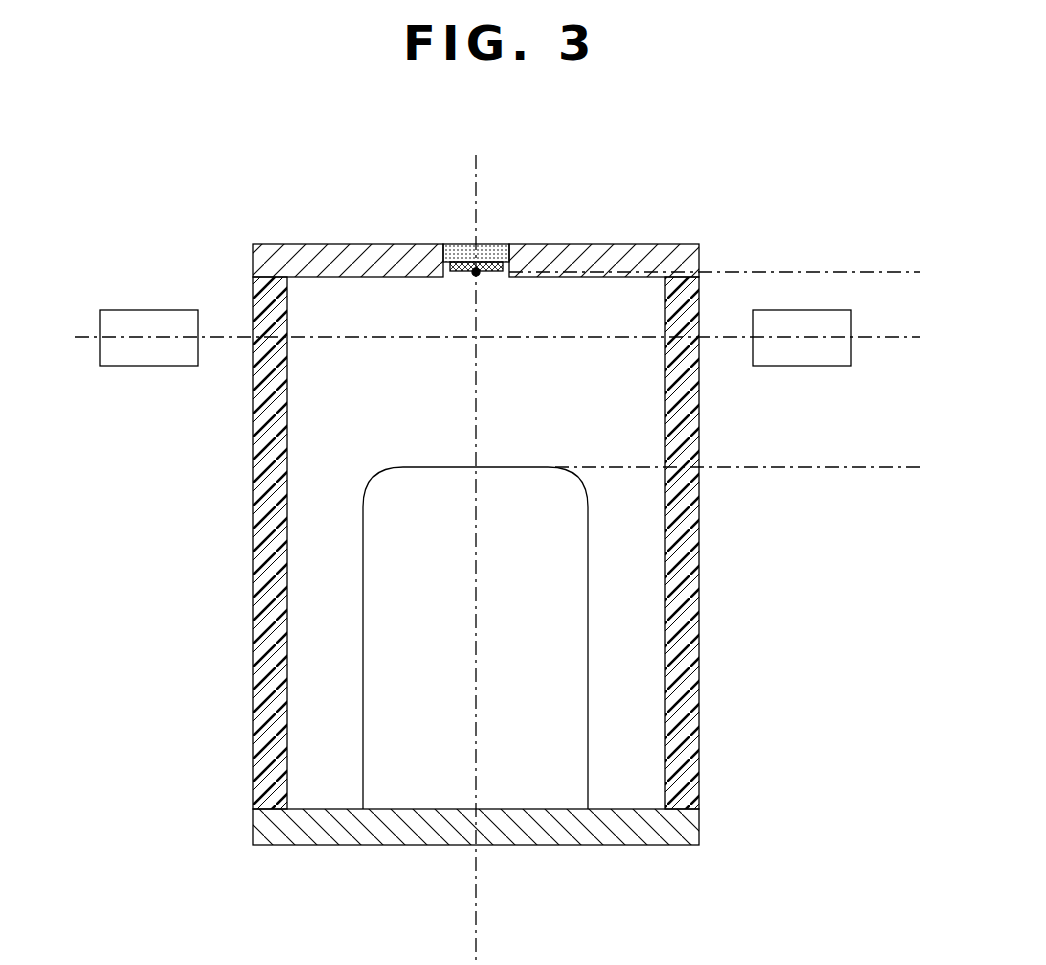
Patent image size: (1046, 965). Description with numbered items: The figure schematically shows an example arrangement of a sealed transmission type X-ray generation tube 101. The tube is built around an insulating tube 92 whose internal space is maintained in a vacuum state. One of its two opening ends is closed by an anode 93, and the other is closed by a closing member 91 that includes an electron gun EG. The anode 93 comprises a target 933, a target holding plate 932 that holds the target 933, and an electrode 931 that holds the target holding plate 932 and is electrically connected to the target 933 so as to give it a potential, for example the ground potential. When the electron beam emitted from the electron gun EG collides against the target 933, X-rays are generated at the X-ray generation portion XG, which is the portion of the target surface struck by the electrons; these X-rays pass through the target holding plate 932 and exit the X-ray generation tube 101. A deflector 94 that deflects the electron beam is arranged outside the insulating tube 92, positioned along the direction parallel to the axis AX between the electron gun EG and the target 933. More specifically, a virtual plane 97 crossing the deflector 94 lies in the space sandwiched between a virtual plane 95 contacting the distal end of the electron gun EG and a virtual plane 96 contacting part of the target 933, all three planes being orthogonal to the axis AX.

The X-ray generation tube 101 is at (549, 517).
The closing member 91 is at (613, 838).
The insulating tube 92 is at (689, 528).
The anode 93 is at (476, 203).
The electrode 931 is at (605, 260).
The target holding plate 932 is at (486, 251).
The target 933 is at (526, 228).
The deflector 94 is at (158, 310).
The virtual plane 95 is at (897, 469).
The virtual plane 96 is at (835, 272).
The virtual plane 97 is at (892, 339).
The axis AX is at (477, 908).
The electron gun EG is at (550, 462).
The X-ray generation portion XG is at (473, 276).